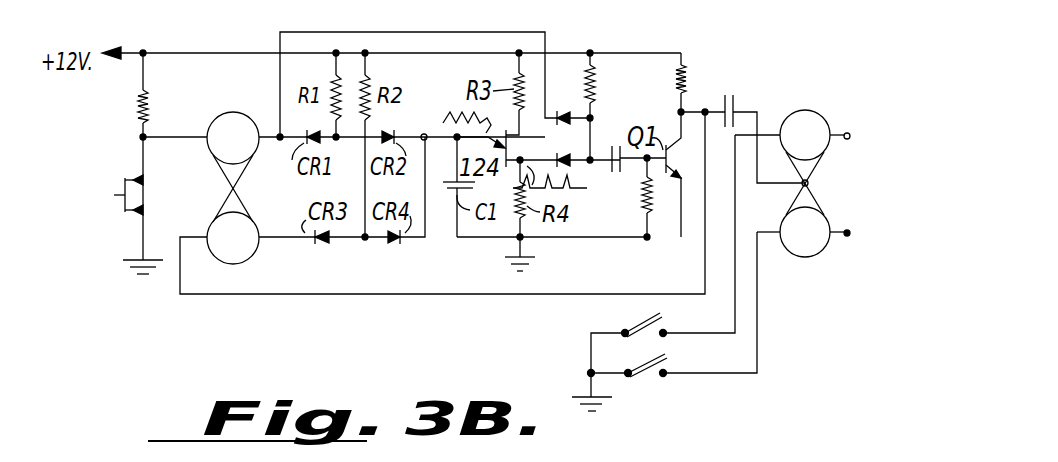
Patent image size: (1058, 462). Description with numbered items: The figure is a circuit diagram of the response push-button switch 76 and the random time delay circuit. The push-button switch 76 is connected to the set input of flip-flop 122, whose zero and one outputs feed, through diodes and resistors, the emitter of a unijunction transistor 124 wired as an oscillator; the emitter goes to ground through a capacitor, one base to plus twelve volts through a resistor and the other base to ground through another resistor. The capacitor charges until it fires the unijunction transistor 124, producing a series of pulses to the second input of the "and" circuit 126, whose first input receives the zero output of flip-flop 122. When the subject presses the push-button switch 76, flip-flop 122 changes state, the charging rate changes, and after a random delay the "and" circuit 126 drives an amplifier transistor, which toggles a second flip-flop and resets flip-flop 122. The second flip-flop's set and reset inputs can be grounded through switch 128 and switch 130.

The response push-button switch 76 is at (125, 186).
The flip-flop 122 is at (240, 188).
The unijunction transistor 124 is at (795, 186).
The "and" circuit 126 is at (603, 108).
The switch 128 is at (640, 322).
The switch 130 is at (637, 378).